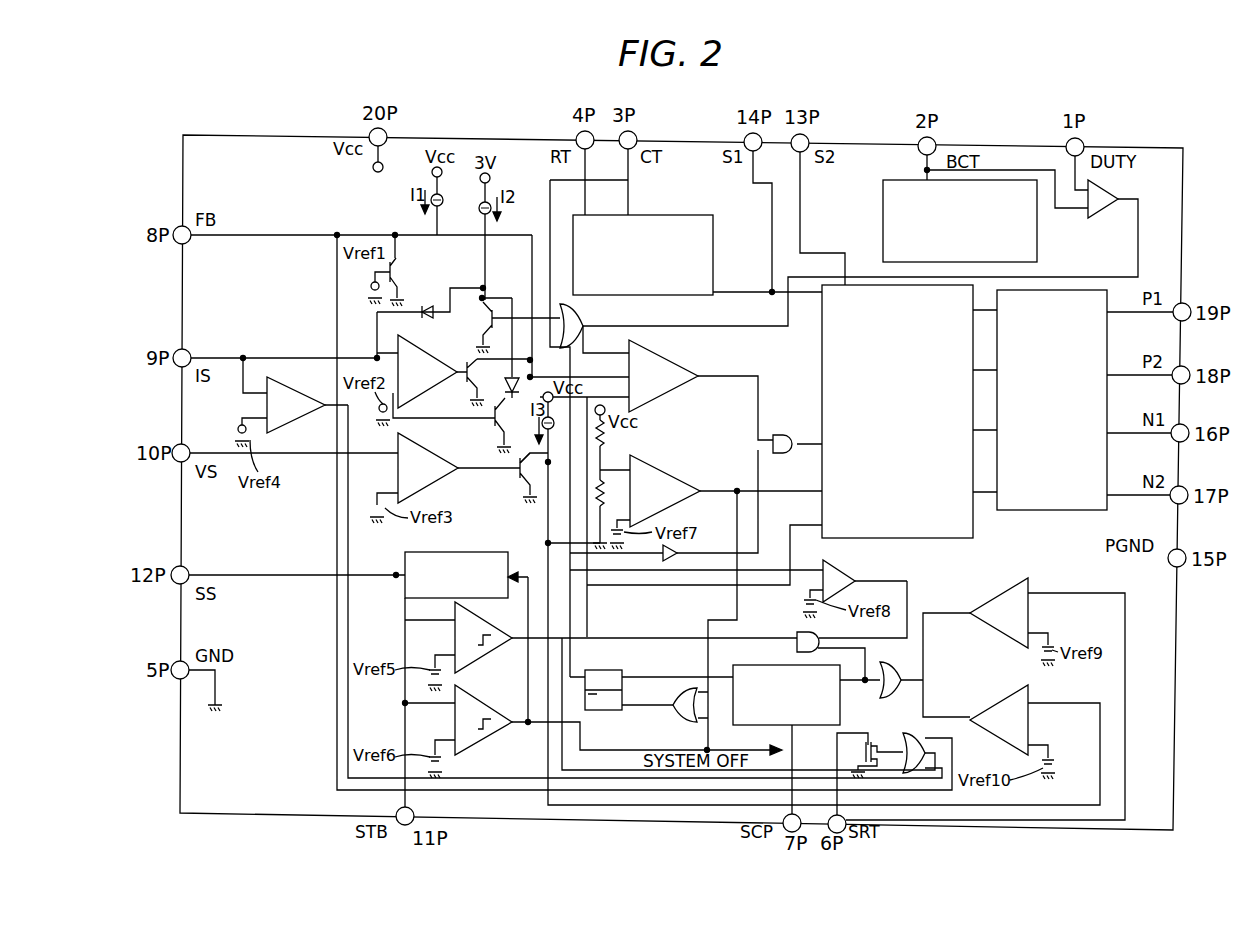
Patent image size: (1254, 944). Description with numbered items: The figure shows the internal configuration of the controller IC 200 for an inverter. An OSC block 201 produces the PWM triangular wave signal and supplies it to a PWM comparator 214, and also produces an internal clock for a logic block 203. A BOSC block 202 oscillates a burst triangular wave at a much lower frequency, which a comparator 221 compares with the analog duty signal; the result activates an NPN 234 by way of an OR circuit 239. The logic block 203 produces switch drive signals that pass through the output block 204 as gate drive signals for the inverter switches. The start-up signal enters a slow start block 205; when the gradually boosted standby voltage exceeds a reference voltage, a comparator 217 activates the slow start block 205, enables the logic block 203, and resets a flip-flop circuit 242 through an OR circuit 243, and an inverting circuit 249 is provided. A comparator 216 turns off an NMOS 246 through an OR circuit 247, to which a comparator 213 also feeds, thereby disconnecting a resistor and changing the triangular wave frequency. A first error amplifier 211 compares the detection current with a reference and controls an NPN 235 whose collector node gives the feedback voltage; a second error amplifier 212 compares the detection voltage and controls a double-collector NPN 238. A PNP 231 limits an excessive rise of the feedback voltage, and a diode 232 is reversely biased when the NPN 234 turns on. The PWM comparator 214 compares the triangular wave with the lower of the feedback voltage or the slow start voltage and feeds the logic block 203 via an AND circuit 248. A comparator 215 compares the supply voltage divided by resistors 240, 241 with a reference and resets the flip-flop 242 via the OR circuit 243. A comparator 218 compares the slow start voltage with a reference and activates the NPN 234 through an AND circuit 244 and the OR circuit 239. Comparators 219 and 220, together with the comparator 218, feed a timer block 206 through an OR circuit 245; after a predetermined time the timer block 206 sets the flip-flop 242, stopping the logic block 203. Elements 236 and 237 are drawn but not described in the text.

The controller IC 200 is at (295, 135).
The OSC block 201 is at (672, 216).
The BOSC block 202 is at (1038, 261).
The logic block 203 is at (937, 540).
The output block 204 is at (1050, 512).
The slow start block 205 is at (405, 592).
The timer block 206 is at (795, 728).
The first error amplifier 211 is at (427, 361).
The second error amplifier 212 is at (432, 462).
The comparator 213 is at (318, 380).
The PWM comparator 214 is at (668, 352).
The comparator 215 is at (669, 485).
The comparator 216 is at (492, 668).
The comparator 217 is at (497, 748).
The comparator 218 is at (855, 562).
The comparator 219 is at (1008, 582).
The comparator 220 is at (1008, 692).
The comparator 221 is at (1105, 220).
The PNP transistor 231 is at (399, 261).
The diode 232 is at (425, 305).
The NPN transistor 234 is at (466, 332).
The NPN transistor 235 is at (455, 390).
The transistor 236 is at (484, 433).
The diode 237 is at (519, 380).
The NPN transistor of double collector structure 238 is at (518, 480).
The OR circuit 239 is at (584, 330).
The resistor 240 is at (608, 436).
The resistor 241 is at (600, 492).
The flip-flop circuit 242 is at (615, 668).
The OR circuit 243 is at (672, 715).
The AND circuit 244 is at (797, 634).
The OR circuit 245 is at (905, 684).
The NMOS 246 is at (868, 740).
The OR circuit 247 is at (908, 732).
The AND circuit 248 is at (784, 433).
The inverting circuit 249 is at (670, 565).